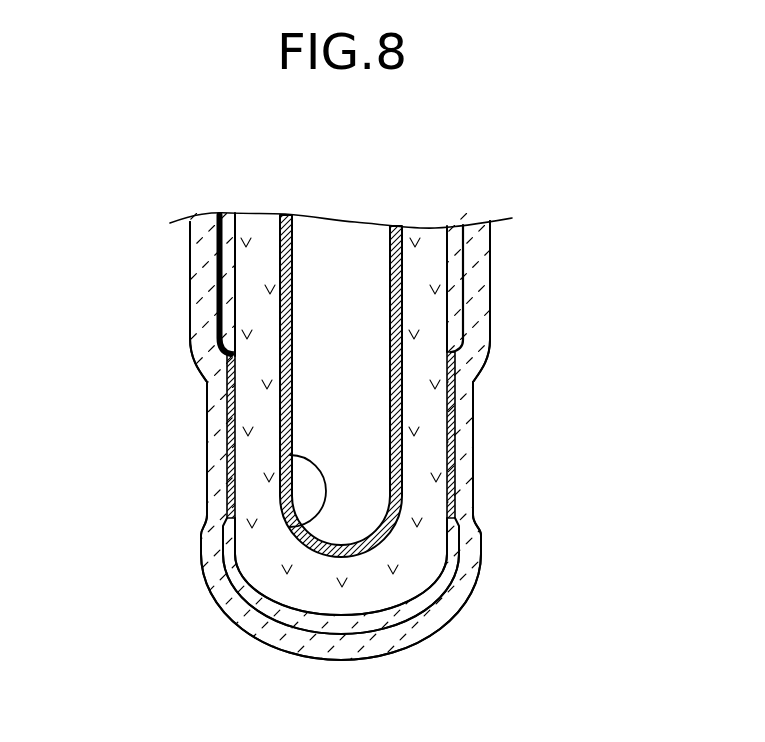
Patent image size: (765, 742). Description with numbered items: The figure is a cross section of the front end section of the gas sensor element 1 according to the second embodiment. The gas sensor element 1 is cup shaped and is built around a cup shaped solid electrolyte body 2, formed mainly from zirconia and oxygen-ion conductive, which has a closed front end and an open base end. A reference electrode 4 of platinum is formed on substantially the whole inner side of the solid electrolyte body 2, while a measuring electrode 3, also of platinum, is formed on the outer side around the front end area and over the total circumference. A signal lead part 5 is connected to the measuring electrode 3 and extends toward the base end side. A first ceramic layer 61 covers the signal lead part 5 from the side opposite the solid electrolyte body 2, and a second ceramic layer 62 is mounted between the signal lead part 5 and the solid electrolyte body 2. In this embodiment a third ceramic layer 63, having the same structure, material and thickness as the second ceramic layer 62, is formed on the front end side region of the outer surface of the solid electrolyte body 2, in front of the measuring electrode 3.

The gas sensor element 1 is at (535, 275).
The solid electrolyte body 2 is at (432, 247).
The measuring electrode 3 is at (228, 470).
The reference electrode 4 is at (288, 530).
The signal lead part 5 is at (215, 281).
The first ceramic layer 61 is at (202, 253).
The second ceramic layer 62 is at (228, 218).
The third ceramic layer 63 is at (420, 593).